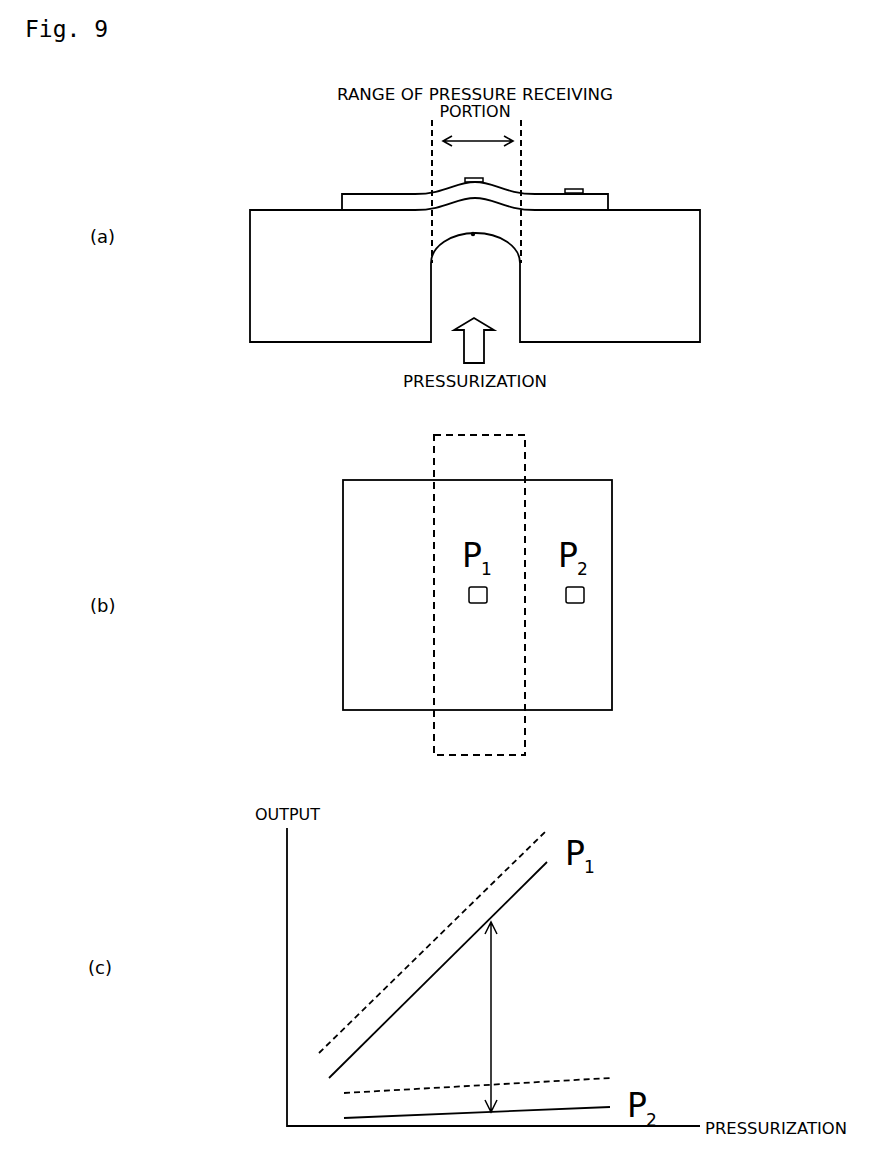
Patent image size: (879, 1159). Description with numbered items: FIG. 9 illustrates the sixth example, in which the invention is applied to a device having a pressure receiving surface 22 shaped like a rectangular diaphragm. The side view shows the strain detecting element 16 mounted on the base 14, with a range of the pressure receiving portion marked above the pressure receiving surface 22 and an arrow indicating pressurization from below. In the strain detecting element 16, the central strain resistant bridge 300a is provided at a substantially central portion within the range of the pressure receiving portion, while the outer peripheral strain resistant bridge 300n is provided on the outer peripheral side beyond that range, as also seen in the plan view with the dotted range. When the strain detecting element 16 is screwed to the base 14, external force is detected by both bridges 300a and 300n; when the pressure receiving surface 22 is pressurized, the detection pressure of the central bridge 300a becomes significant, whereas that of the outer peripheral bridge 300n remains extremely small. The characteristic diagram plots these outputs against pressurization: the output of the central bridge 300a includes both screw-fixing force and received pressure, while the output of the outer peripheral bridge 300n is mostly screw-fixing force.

The base 14 is at (250, 262).
The strain detecting element 16 is at (348, 203).
The pressure receiving surface 22 is at (473, 234).
The central strain resistant bridge 300a is at (467, 178).
The outer peripheral strain resistant bridge 300n is at (578, 189).